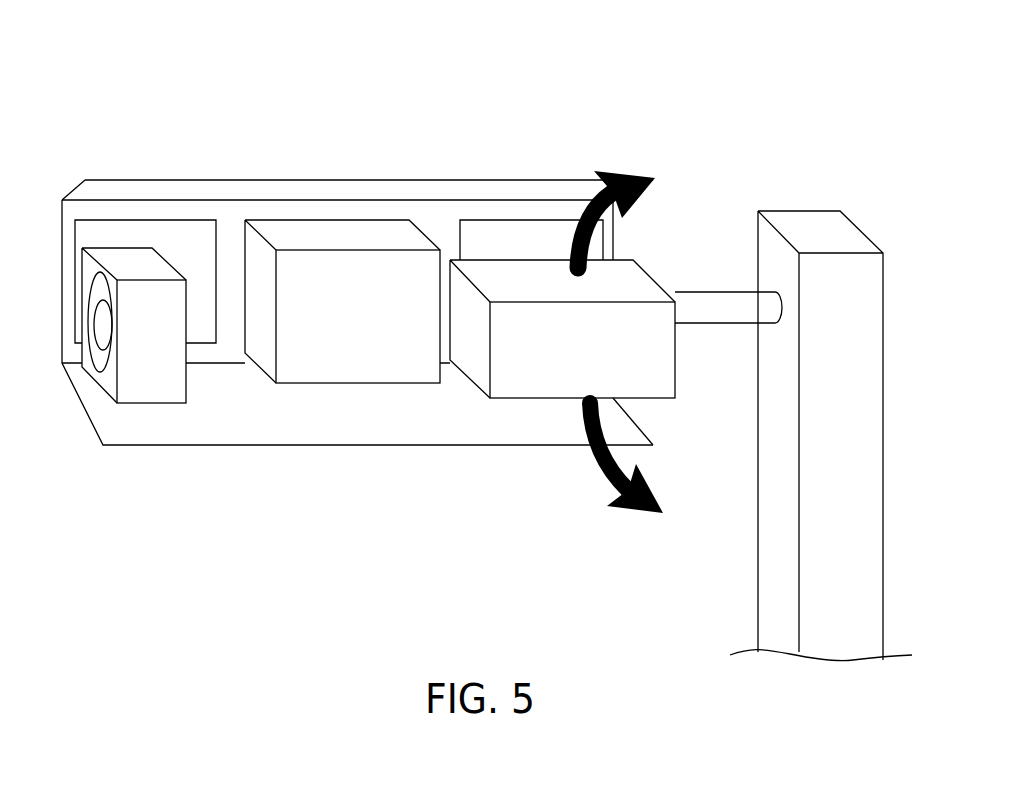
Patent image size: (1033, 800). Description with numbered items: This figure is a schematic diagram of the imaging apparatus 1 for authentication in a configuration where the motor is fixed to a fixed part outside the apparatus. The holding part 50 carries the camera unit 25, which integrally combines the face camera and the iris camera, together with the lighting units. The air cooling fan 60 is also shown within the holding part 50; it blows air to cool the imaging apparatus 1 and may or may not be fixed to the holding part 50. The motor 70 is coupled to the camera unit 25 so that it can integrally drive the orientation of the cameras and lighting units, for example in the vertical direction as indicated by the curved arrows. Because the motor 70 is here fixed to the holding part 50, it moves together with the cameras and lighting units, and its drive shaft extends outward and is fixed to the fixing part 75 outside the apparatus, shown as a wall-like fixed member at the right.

The imaging apparatus for authentication 1 is at (510, 52).
The camera unit 25 is at (302, 228).
The holding part 50 is at (458, 180).
The air cooling fan 60 is at (155, 405).
The motor 70 is at (530, 399).
The fixing part 75 is at (813, 211).